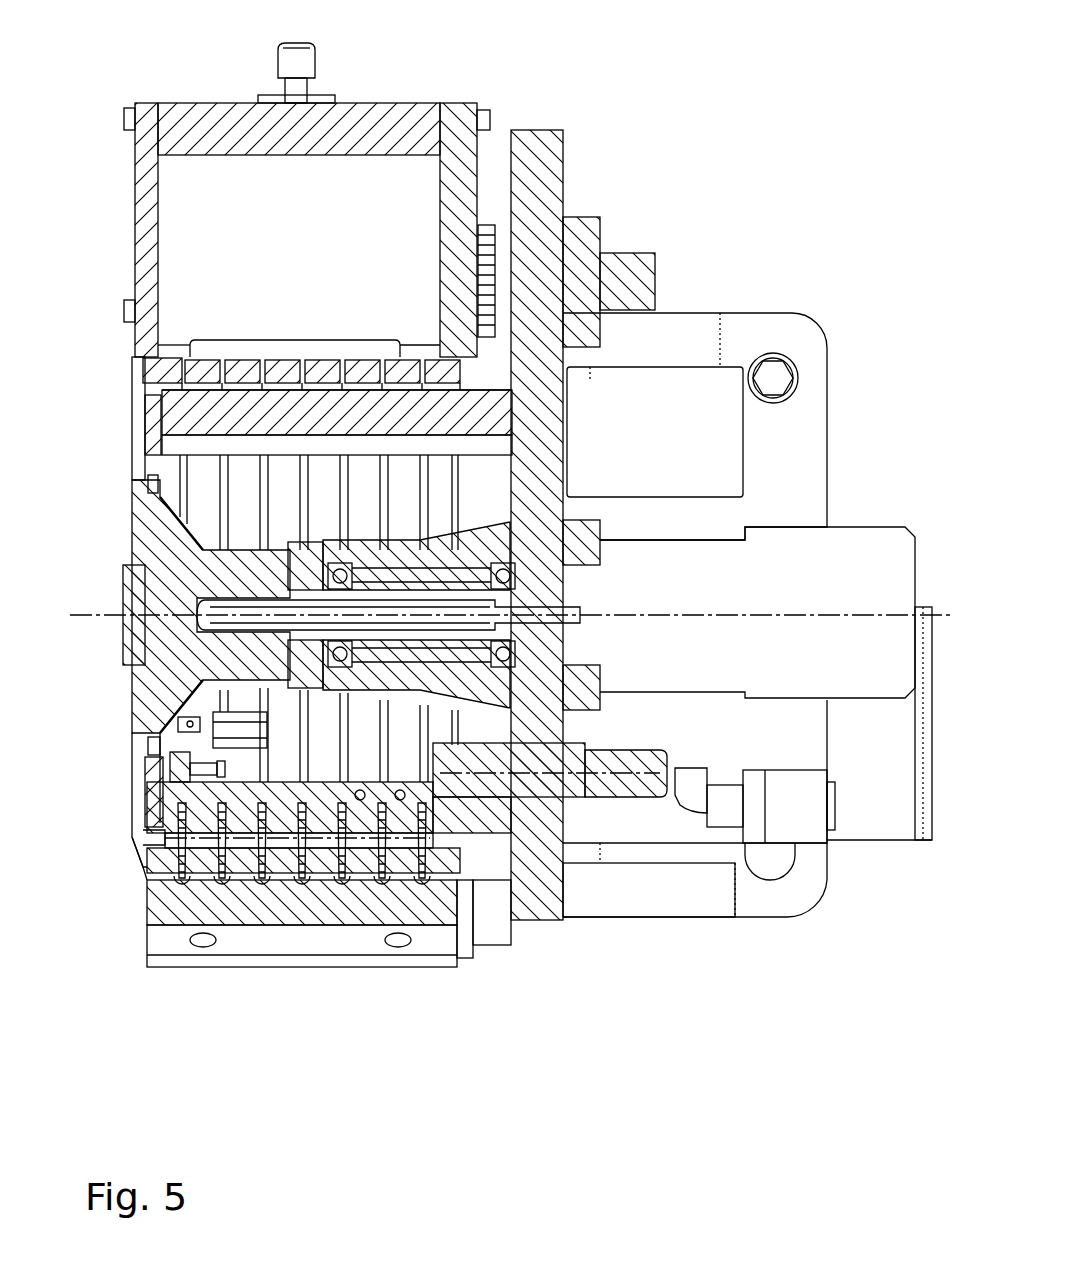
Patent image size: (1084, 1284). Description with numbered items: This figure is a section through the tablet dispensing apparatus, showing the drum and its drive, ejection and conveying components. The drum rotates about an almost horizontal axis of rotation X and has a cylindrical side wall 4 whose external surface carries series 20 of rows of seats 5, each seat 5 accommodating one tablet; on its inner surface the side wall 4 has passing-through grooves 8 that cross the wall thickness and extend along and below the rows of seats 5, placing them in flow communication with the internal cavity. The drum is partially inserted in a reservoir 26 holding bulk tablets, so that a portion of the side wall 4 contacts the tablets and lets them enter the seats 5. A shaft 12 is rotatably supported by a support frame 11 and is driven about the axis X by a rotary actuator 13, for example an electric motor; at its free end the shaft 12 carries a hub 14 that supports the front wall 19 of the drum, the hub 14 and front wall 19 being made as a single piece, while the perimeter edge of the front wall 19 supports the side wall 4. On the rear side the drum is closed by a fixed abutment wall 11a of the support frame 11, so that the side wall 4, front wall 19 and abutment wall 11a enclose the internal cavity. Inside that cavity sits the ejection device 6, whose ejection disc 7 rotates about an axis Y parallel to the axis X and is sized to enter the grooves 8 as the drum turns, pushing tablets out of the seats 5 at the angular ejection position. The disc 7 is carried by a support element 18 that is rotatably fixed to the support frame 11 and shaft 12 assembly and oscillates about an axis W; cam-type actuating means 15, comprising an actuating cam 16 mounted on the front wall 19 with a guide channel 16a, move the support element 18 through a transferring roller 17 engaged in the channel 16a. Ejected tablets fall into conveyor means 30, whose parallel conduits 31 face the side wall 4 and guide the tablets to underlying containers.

The side wall 4 is at (153, 368).
The seat 5 is at (430, 353).
The ejection device 6 is at (116, 806).
The ejection disc 7 is at (423, 868).
The groove 8 is at (180, 488).
The support frame 11 is at (527, 198).
The abutment wall 11a is at (535, 432).
The shaft 12 is at (570, 610).
The rotary actuator 13 is at (870, 594).
The hub 14 is at (376, 340).
The actuating means 15 is at (150, 872).
The actuating cam 16 is at (150, 400).
The guide channel 16a is at (150, 418).
The transferring roller 17 is at (150, 840).
The support element 18 is at (563, 847).
The front wall 19 is at (146, 834).
The series of rows 20 is at (235, 340).
The reservoir 26 is at (320, 243).
The conveyor means 30 is at (207, 905).
The conduit 31 is at (273, 870).
The axis of oscillation W is at (717, 767).
The axis of rotation X is at (943, 603).
The axis of rotation Y is at (460, 877).